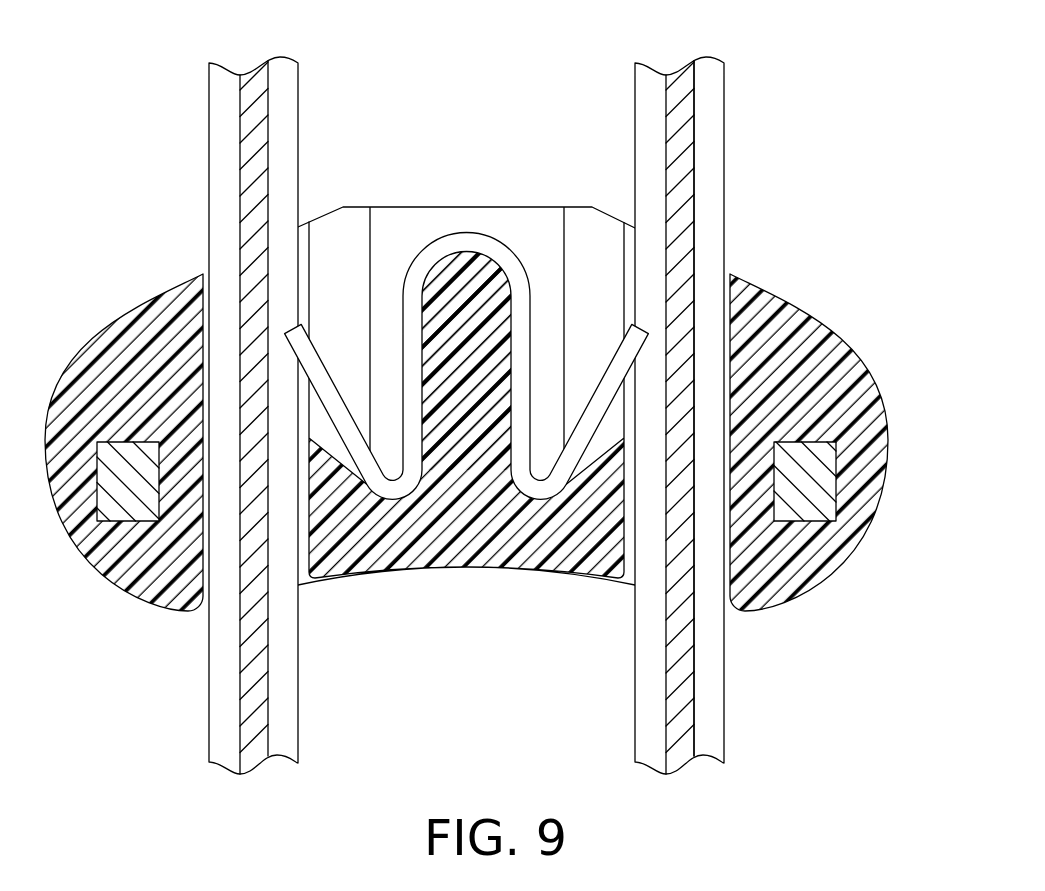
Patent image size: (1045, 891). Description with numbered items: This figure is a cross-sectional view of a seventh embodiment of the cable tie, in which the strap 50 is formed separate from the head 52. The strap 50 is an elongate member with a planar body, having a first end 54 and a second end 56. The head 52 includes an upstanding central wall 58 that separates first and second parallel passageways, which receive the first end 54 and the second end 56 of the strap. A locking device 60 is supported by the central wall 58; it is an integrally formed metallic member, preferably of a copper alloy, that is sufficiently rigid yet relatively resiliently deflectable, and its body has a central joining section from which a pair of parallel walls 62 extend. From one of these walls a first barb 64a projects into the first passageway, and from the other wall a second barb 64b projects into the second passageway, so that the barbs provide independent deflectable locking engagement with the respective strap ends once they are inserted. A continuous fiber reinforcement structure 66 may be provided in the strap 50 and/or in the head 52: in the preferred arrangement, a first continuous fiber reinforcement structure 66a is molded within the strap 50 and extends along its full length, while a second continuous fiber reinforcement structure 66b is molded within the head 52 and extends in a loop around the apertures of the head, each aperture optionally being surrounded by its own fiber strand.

The strap 50 is at (223, 593).
The head 52 is at (869, 202).
The first end 54 is at (283, 110).
The second end 56 is at (709, 108).
The central wall 58 is at (463, 273).
The locking device 60 is at (505, 252).
The parallel walls 62 is at (413, 340).
The first barb 64a is at (437, 380).
The second barb 64b is at (498, 380).
The continuous fiber reinforcement structure 66 is at (133, 507).
The first continuous fiber reinforcement structure 66a is at (695, 639).
The second continuous fiber reinforcement structure 66b is at (808, 512).